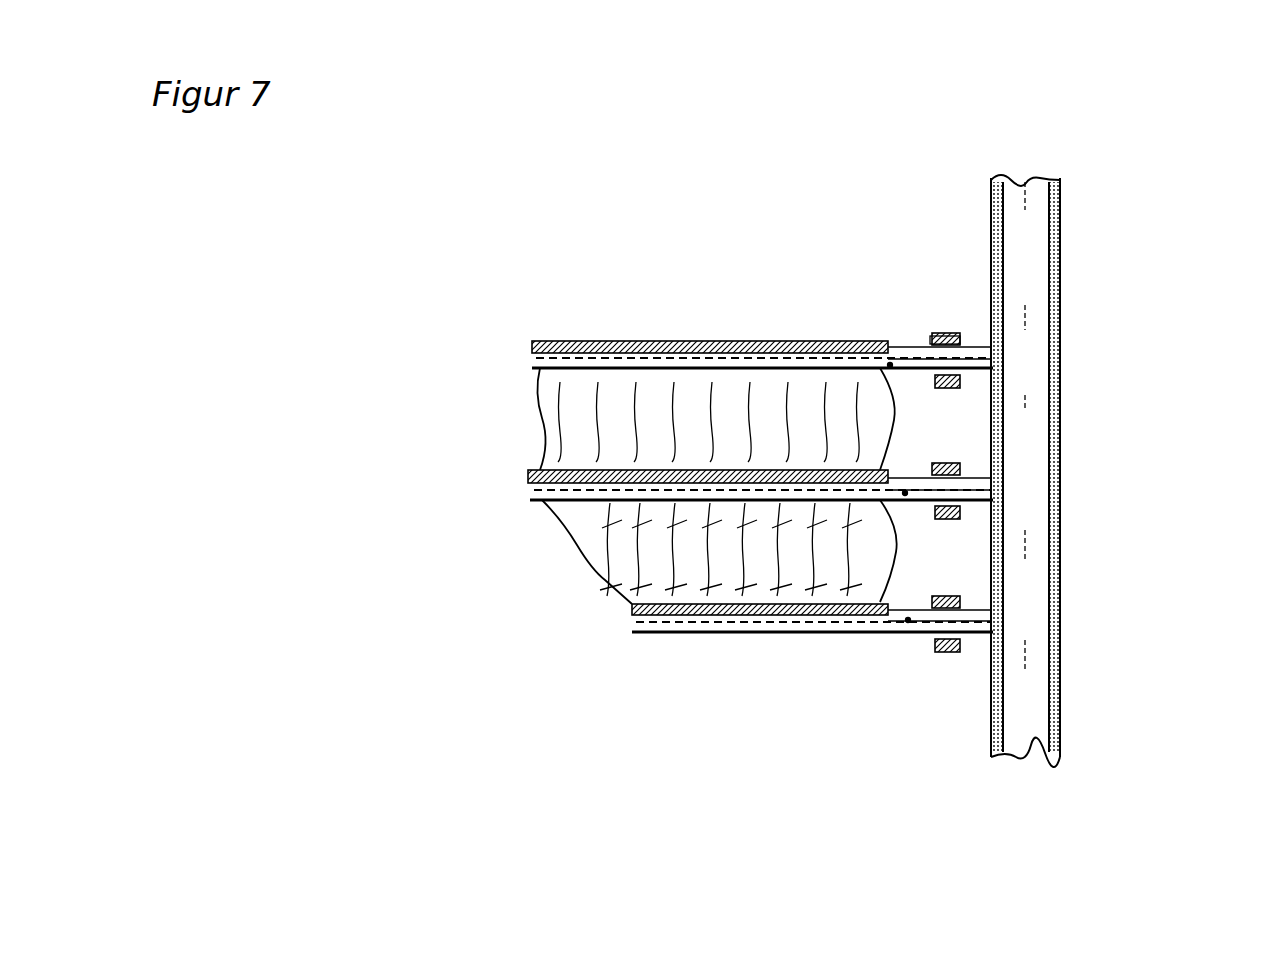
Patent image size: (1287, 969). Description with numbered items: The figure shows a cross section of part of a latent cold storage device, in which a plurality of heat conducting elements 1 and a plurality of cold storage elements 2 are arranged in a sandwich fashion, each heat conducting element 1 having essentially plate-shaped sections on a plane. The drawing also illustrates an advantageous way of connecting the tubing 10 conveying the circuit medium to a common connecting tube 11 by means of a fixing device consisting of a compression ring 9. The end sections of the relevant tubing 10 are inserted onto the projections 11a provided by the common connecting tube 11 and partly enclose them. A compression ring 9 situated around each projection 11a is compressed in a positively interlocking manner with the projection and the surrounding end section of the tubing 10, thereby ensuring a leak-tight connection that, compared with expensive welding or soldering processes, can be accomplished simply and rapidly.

The heat conducting element 1 is at (665, 478).
The cold storage element 2 is at (887, 538).
The compression ring 9 is at (930, 338).
The tubing conveying the circuit medium 10 is at (908, 620).
The common connecting tube 11 is at (1035, 318).
The projections of the common connecting tube 11a is at (960, 605).